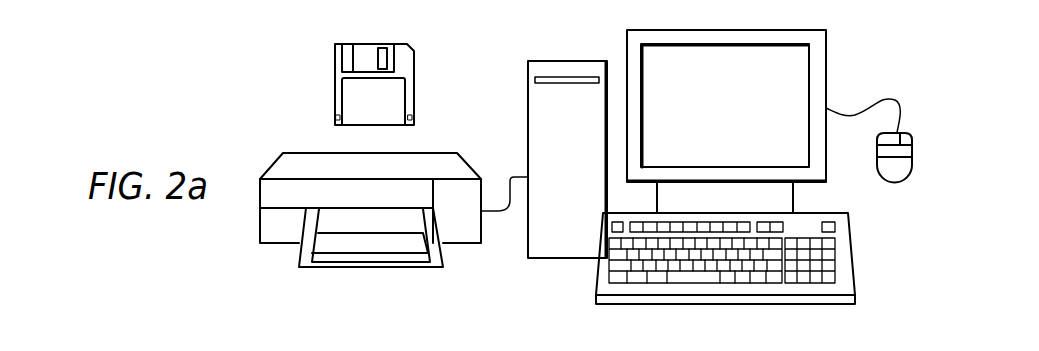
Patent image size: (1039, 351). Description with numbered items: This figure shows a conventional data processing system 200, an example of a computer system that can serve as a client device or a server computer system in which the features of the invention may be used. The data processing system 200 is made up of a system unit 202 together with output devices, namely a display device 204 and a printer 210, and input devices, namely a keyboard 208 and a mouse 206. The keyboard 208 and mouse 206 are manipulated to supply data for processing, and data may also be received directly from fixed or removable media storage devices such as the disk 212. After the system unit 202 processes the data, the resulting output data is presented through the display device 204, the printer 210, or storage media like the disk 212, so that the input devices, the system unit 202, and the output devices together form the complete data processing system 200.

The data processing system 200 is at (1003, 90).
The system unit 202 is at (528, 77).
The display device 204 is at (826, 63).
The mouse 206 is at (912, 158).
The keyboard 208 is at (853, 240).
The printer 210 is at (283, 162).
The disk 212 is at (335, 59).